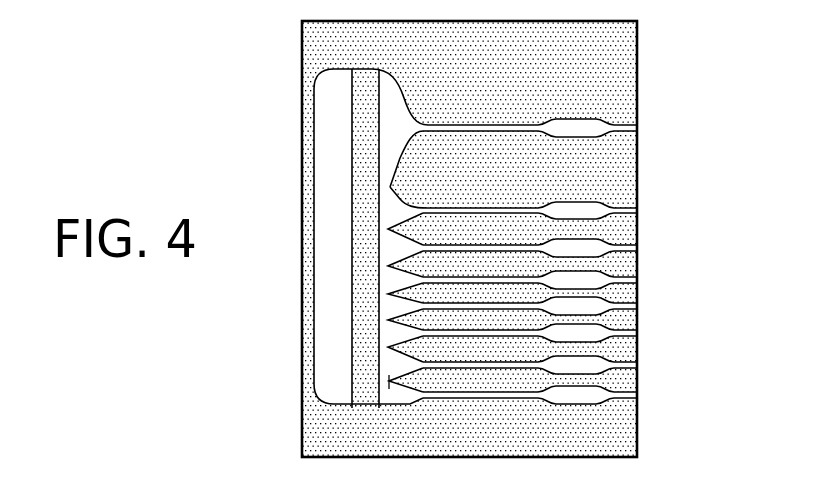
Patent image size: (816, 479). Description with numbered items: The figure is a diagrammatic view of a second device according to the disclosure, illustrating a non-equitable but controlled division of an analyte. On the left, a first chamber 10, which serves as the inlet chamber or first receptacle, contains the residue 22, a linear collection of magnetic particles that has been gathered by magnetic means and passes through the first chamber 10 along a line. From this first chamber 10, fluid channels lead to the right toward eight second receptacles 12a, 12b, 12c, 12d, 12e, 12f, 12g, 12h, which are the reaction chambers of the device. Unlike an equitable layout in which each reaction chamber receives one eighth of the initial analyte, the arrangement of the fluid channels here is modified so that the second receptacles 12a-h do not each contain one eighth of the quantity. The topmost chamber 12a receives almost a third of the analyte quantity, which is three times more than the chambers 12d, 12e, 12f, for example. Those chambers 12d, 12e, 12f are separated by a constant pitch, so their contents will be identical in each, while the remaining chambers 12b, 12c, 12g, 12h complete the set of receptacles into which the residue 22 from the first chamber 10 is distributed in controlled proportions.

The first chamber 10 is at (325, 136).
The residue 22 is at (368, 393).
The second receptacle 12a is at (570, 130).
The second receptacle 12b is at (566, 212).
The second receptacle 12c is at (590, 249).
The second receptacle 12d is at (591, 284).
The second receptacle 12e is at (595, 312).
The second receptacle 12f is at (591, 334).
The second receptacle 12g is at (588, 363).
The second receptacle 12h is at (570, 395).